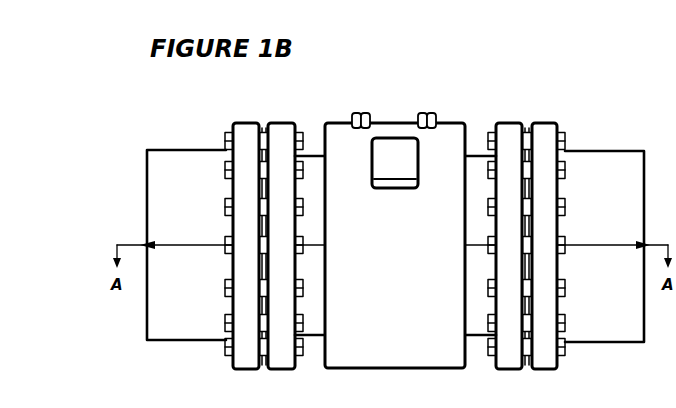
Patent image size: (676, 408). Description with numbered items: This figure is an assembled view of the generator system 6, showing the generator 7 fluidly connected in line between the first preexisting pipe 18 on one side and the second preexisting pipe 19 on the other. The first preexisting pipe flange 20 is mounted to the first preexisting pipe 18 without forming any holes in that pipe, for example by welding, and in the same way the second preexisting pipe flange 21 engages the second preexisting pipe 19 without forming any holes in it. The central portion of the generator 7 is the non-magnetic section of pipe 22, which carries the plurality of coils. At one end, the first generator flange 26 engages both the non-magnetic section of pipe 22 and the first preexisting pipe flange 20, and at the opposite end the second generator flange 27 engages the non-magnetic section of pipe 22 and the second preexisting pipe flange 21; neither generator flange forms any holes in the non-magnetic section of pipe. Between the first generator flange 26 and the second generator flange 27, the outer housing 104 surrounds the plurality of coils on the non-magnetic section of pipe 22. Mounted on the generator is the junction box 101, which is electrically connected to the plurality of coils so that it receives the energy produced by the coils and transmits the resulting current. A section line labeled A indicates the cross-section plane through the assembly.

The generator system 6 is at (122, 97).
The generator 7 is at (443, 76).
The first preexisting pipe 18 is at (194, 150).
The second preexisting pipe 19 is at (610, 145).
The first preexisting pipe flange 20 is at (247, 123).
The second preexisting pipe flange 21 is at (545, 123).
The non-magnetic section of pipe 22 is at (313, 155).
The first generator flange 26 is at (283, 123).
The second generator flange 27 is at (508, 123).
The junction box 101 is at (392, 138).
The outer housing 104 is at (404, 122).